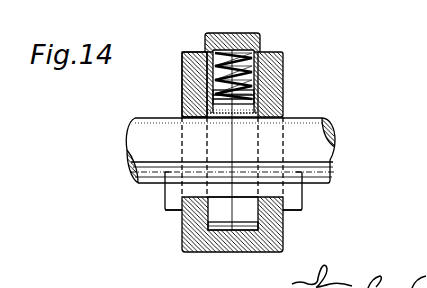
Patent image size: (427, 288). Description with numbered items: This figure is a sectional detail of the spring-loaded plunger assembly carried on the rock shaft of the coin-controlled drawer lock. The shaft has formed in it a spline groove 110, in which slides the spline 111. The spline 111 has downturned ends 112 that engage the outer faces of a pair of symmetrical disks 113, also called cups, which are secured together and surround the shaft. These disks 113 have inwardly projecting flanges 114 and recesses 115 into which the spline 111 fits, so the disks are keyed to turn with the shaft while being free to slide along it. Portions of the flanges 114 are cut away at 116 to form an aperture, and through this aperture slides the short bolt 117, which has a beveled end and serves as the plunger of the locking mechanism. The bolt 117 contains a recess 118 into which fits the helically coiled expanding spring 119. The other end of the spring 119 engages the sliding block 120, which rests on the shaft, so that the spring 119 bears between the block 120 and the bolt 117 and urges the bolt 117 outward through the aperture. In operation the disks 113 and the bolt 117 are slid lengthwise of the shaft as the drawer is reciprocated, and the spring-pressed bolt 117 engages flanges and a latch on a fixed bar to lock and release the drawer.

The spline groove 110 is at (127, 182).
The spline 111 is at (295, 192).
The downturned ends 112 is at (165, 211).
The symmetrical disks 113 is at (183, 78).
The inwardly projecting flanges 114 is at (210, 243).
The recesses 115 is at (220, 224).
The cut-away portion 116 is at (258, 62).
The short bolt 117 is at (243, 35).
The recess 118 is at (257, 80).
The helically coiled expanding spring 119 is at (256, 96).
The sliding block 120 is at (198, 113).